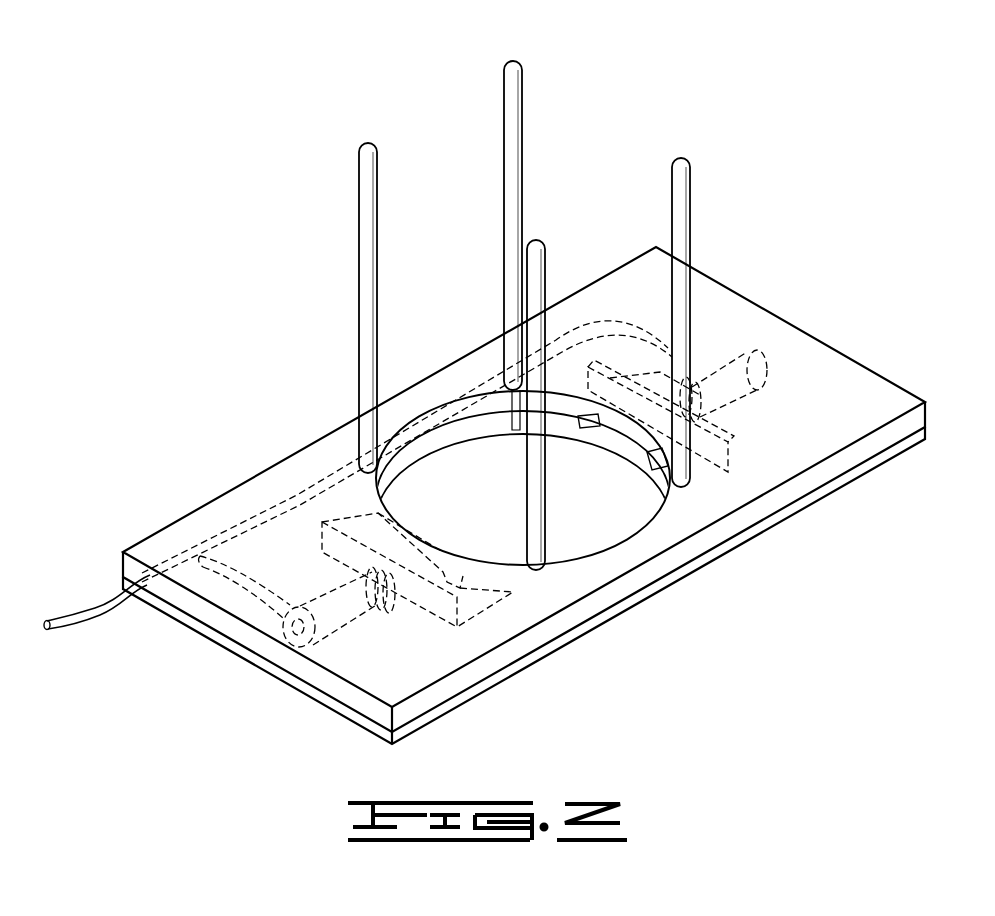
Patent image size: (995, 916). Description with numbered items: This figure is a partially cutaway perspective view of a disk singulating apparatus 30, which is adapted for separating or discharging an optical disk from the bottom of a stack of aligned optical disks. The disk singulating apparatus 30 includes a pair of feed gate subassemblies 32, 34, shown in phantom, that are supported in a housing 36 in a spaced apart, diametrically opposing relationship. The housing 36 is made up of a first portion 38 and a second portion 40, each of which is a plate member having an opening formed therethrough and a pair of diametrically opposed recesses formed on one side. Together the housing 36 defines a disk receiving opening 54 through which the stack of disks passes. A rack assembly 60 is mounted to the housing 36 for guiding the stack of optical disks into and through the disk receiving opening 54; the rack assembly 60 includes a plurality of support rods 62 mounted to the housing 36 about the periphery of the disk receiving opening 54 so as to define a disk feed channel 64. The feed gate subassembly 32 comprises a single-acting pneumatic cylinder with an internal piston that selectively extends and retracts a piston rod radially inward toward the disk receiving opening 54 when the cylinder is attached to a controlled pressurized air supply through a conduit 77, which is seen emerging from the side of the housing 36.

The disk singulating apparatus 30 is at (477, 398).
The feed gate subassembly 32 is at (278, 625).
The feed gate subassembly 34 is at (757, 343).
The housing 36 is at (810, 502).
The first portion 38 is at (853, 380).
The second portion 40 is at (705, 566).
The disk receiving opening 54 is at (487, 512).
The rack assembly 60 is at (535, 117).
The support rods 62 is at (522, 313).
The disk feed channel 64 is at (522, 311).
The conduit 77 is at (92, 610).